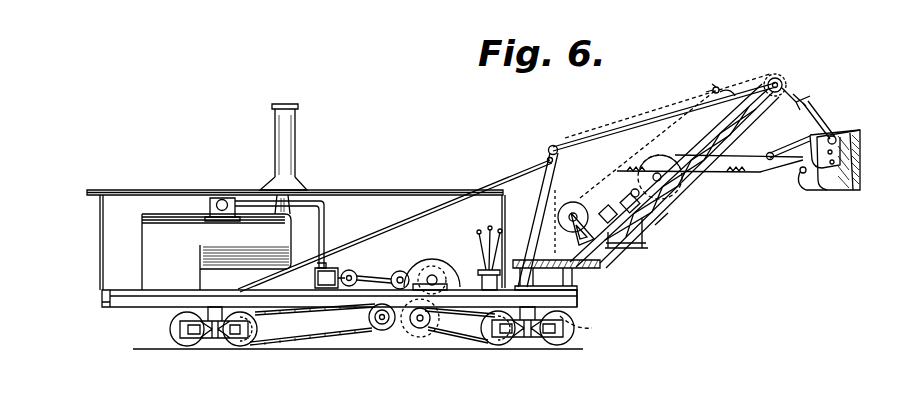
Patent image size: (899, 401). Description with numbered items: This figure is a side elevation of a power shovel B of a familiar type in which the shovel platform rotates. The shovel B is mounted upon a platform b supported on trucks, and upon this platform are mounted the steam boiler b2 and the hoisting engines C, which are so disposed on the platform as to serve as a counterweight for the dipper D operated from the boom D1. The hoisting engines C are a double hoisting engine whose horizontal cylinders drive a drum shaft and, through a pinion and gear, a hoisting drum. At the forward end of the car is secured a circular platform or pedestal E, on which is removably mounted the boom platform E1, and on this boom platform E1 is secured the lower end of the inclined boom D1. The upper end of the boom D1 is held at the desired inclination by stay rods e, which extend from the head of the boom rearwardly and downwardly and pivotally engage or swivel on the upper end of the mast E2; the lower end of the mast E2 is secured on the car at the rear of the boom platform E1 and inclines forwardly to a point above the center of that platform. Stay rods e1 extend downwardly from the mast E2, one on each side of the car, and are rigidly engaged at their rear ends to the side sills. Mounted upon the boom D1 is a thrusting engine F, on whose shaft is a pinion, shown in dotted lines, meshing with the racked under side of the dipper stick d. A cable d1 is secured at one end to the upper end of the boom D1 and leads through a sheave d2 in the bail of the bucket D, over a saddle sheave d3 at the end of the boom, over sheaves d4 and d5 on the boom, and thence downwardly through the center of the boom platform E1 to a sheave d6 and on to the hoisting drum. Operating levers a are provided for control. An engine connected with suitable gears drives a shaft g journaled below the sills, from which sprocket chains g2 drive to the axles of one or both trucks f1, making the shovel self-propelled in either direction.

The power shovel B is at (316, 286).
The steam boiler b2 is at (150, 263).
The hoisting engines C is at (374, 276).
The operating levers a is at (480, 268).
The stay rods e1 is at (392, 220).
The mast E2 is at (546, 162).
The stay rods e is at (608, 133).
The boom platform E1 is at (580, 264).
The circular platform or pedestal E is at (577, 286).
The boom D1 is at (698, 190).
The sheave d5 is at (571, 203).
The dipper stick d is at (758, 174).
The cable d1 is at (763, 69).
The sheave d4 is at (712, 73).
The saddle sheave d3 is at (784, 87).
The sheave d2 is at (807, 102).
The dipper D is at (832, 197).
The thrusting engine F is at (656, 226).
The platform b is at (580, 298).
The sheave d6 is at (595, 327).
The wheel trucks f1 is at (535, 332).
The shaft g is at (421, 331).
The sprocket chains g2 is at (463, 340).